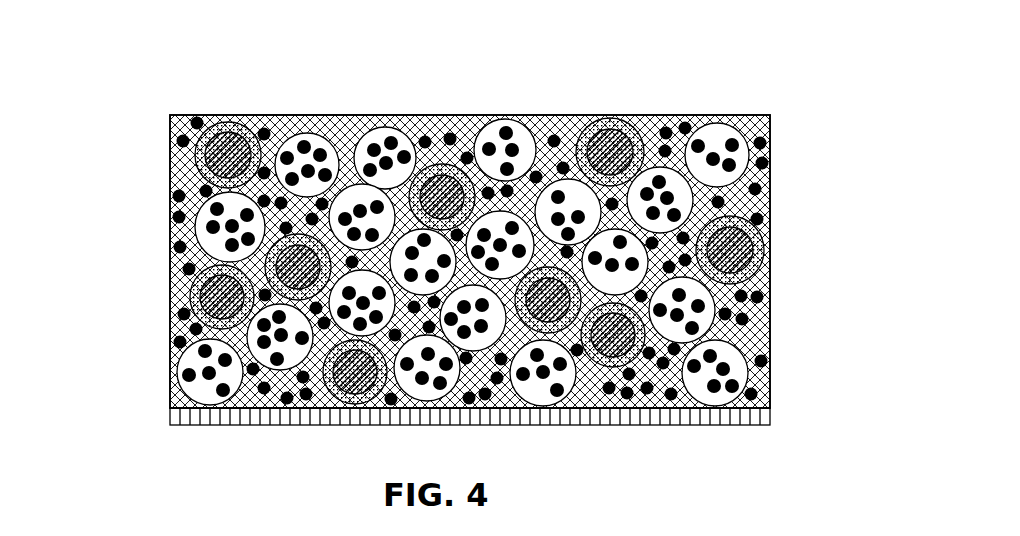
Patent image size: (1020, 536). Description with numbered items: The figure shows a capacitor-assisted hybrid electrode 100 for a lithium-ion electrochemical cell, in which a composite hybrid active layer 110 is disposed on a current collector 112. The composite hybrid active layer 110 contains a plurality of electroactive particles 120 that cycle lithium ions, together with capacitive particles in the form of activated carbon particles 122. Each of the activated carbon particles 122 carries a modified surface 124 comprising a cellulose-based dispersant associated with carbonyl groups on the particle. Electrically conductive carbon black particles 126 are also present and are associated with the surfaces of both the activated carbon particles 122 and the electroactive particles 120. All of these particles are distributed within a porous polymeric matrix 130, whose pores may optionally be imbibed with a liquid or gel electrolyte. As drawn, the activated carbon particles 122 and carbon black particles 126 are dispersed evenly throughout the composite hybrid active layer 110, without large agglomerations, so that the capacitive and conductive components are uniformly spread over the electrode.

The capacitor-assisted hybrid electrode 100 is at (150, 89).
The composite hybrid active layer 110 is at (160, 108).
The current collector 112 is at (772, 417).
The electroactive particles 120 is at (504, 150).
The activated carbon particles 122 is at (230, 155).
The modified surface 124 is at (219, 122).
The carbon black particles 126 is at (765, 155).
The porous polymeric matrix 130 is at (560, 115).